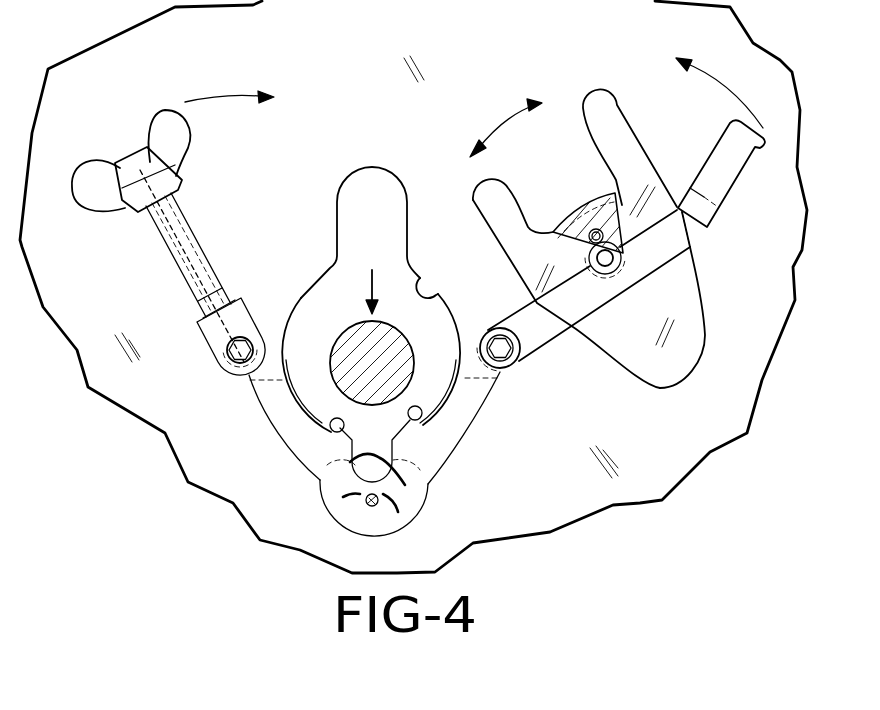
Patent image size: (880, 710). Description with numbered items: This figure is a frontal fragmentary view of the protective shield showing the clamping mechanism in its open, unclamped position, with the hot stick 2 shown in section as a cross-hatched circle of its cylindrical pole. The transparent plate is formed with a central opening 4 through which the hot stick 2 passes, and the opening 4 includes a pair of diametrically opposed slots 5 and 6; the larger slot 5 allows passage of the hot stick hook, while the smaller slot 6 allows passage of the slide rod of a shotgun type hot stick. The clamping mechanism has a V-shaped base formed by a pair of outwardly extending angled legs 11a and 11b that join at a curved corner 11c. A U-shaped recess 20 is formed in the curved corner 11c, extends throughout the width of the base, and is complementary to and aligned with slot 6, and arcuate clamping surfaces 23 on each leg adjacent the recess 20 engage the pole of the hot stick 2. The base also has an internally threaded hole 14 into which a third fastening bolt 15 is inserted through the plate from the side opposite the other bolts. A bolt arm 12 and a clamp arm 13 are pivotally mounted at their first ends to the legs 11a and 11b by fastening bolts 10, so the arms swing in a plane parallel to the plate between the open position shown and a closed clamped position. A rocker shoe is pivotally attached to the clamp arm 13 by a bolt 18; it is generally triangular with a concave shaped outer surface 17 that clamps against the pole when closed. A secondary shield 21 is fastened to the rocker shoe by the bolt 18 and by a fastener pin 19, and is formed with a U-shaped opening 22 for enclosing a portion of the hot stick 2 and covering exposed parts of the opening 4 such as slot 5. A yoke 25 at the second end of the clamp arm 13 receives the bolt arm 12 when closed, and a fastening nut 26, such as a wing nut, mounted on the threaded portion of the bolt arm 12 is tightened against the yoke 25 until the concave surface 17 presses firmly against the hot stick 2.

The hot stick 2 is at (348, 330).
The central opening 4 is at (437, 292).
The slot 5 is at (373, 196).
The slot 6 is at (350, 462).
The fastening bolts 10 is at (240, 354).
The angled leg 11a is at (286, 421).
The angled leg 11b is at (470, 400).
The curved corner 11c is at (445, 447).
The bolt arm 12 is at (178, 252).
The clamp arm 13 is at (603, 300).
The internally threaded hole 14 is at (402, 516).
The third fastening bolt 15 is at (351, 516).
The concave shaped outer surface 17 is at (573, 233).
The bolt 18 is at (607, 257).
The fastener pin 19 is at (603, 228).
The U-shaped recess 20 is at (405, 485).
The secondary shield 21 is at (653, 365).
The U-shaped opening 22 is at (573, 140).
The arcuate clamping surfaces 23 is at (345, 432).
The yoke 25 is at (718, 172).
The fastening nut 26 is at (90, 185).